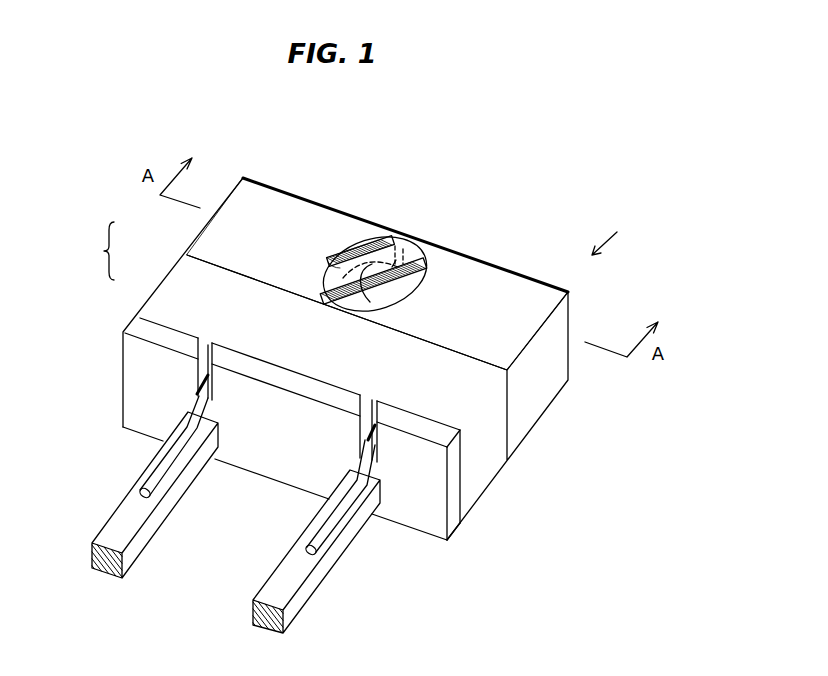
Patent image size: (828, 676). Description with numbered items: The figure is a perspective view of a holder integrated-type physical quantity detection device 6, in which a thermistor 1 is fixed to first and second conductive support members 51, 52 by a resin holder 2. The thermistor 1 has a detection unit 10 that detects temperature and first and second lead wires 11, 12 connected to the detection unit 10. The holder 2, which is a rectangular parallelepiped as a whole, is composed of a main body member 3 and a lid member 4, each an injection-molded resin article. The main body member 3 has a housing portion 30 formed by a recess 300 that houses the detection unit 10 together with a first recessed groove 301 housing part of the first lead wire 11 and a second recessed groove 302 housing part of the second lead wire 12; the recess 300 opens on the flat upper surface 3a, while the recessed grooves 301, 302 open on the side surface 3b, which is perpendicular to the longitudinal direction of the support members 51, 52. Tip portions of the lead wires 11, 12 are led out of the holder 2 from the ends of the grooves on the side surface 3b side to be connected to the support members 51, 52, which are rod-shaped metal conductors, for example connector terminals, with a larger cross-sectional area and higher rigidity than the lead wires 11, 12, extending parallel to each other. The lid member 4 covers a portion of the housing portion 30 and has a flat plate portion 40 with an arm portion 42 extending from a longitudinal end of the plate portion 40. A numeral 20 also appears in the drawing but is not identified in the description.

The thermistor 1 is at (383, 260).
The holder 2 is at (101, 251).
The main body member 3 is at (197, 233).
The upper surface 3a is at (502, 278).
The side surface 3b is at (262, 463).
The lid member 4 is at (160, 283).
The plate portion 40 is at (261, 292).
The arm portion 42 is at (480, 483).
The holder integrated-type physical quantity detection device 6 is at (614, 234).
The detection unit 10 is at (413, 280).
The first lead wire 11 is at (152, 482).
The second lead wire 12 is at (313, 533).
The light receiving portion 20 is at (355, 238).
The housing portion 30 is at (385, 225).
The recess 300 is at (335, 249).
The first recessed groove 301 is at (202, 365).
The second recessed groove 302 is at (365, 423).
The first conductive support member 51 is at (122, 523).
The second conductive support member 52 is at (282, 578).